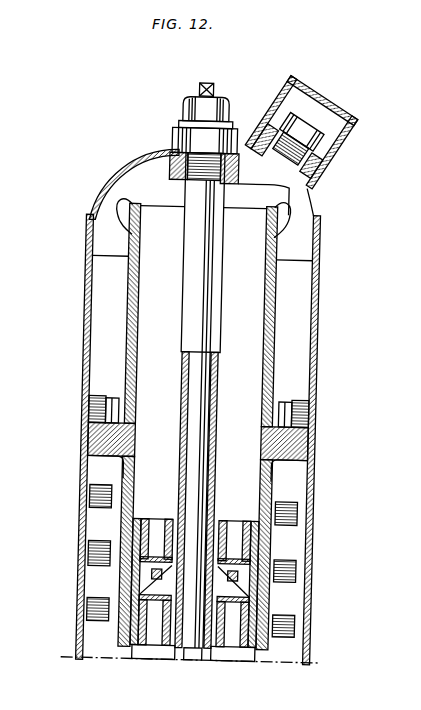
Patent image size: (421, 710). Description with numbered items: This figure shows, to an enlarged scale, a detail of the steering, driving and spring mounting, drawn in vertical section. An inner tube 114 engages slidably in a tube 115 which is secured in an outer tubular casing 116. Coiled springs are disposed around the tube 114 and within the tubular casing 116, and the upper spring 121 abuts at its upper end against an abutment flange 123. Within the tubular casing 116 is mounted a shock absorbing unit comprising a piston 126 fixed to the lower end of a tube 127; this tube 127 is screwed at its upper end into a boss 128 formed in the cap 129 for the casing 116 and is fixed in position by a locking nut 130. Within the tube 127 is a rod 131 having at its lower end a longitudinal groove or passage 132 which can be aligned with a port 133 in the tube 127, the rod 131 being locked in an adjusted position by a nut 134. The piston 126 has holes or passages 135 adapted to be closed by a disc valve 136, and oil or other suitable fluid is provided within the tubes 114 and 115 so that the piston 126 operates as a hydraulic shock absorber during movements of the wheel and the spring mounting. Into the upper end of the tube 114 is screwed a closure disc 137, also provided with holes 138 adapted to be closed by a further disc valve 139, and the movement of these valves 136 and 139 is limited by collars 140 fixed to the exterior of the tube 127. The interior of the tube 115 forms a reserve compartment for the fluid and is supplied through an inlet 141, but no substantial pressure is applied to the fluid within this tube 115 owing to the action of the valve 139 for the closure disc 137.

The tube 114 is at (148, 664).
The tube 115 is at (278, 337).
The outer tubular casing 116 is at (86, 320).
The spring 121 is at (90, 495).
The abutment flange 123 is at (297, 444).
The piston 126 is at (246, 634).
The tube 127 is at (215, 291).
The boss 128 is at (194, 178).
The cap 129 is at (112, 192).
The locking nut 130 is at (180, 139).
The rod 131 is at (193, 413).
The longitudinal groove or passage 132 is at (180, 644).
The port 133 is at (172, 585).
The nut 134 is at (212, 109).
The holes or passages 135 is at (224, 641).
The disc valve 136 is at (258, 566).
The closure disc 137 is at (147, 518).
The holes 138 is at (233, 530).
The disc valve 139 is at (180, 578).
The collars 140 is at (258, 582).
The inlet 141 is at (301, 132).